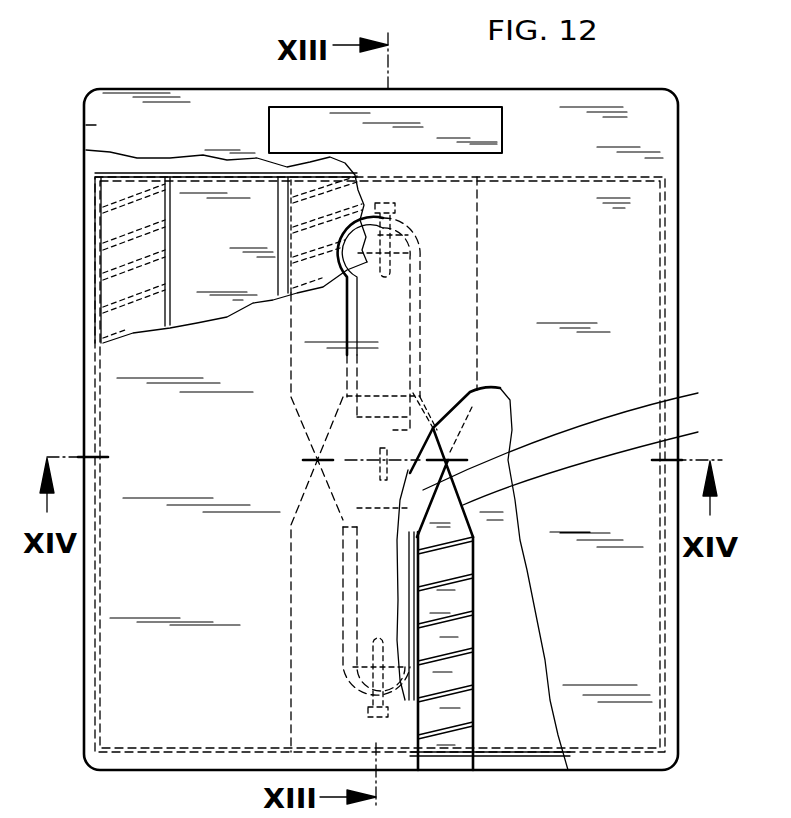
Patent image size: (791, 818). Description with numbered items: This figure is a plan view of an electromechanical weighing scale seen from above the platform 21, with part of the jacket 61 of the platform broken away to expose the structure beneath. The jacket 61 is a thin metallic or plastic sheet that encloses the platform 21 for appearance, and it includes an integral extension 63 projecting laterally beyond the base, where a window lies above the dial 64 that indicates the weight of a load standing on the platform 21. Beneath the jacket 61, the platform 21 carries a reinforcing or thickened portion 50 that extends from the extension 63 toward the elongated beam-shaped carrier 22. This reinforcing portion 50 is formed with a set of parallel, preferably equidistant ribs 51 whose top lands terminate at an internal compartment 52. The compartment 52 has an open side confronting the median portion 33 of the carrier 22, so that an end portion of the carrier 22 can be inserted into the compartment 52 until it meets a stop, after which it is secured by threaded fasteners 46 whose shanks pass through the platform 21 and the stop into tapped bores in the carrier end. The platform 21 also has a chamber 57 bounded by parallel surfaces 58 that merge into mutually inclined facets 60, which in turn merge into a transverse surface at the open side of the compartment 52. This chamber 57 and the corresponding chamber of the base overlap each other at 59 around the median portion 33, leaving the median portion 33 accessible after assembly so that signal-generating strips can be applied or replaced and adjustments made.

The platform 21 is at (612, 269).
The carrier 22 is at (390, 347).
The median portion 33 is at (457, 424).
The threaded fastener 46 is at (395, 237).
The reinforcing portion 50 is at (293, 218).
The ribs 51 is at (450, 693).
The internal compartment 52 is at (320, 243).
The chamber 57 is at (312, 325).
The surfaces 58 is at (283, 632).
The overlap region 59 is at (579, 434).
The facets 60 is at (599, 461).
The jacket 61 is at (677, 215).
The extension 63 is at (643, 140).
The dial 64 is at (303, 130).